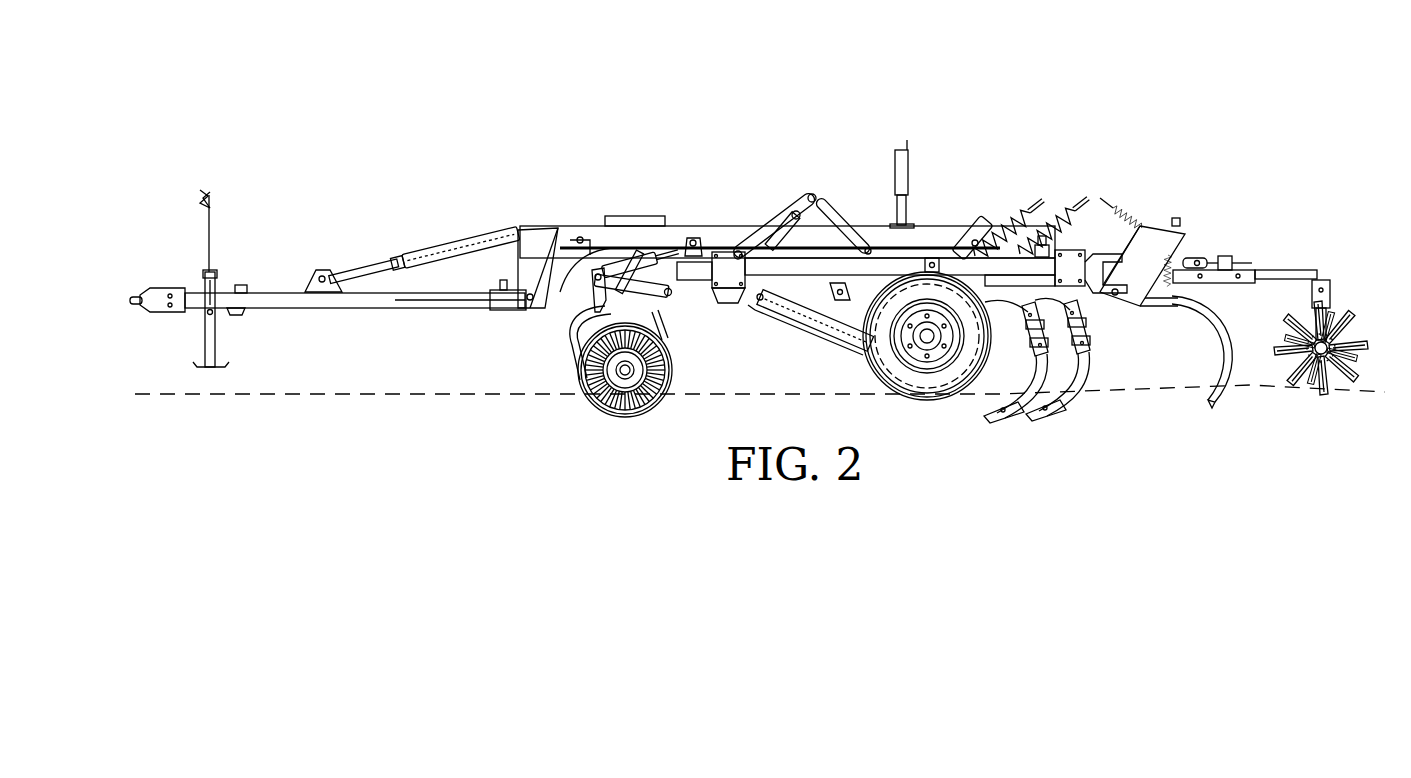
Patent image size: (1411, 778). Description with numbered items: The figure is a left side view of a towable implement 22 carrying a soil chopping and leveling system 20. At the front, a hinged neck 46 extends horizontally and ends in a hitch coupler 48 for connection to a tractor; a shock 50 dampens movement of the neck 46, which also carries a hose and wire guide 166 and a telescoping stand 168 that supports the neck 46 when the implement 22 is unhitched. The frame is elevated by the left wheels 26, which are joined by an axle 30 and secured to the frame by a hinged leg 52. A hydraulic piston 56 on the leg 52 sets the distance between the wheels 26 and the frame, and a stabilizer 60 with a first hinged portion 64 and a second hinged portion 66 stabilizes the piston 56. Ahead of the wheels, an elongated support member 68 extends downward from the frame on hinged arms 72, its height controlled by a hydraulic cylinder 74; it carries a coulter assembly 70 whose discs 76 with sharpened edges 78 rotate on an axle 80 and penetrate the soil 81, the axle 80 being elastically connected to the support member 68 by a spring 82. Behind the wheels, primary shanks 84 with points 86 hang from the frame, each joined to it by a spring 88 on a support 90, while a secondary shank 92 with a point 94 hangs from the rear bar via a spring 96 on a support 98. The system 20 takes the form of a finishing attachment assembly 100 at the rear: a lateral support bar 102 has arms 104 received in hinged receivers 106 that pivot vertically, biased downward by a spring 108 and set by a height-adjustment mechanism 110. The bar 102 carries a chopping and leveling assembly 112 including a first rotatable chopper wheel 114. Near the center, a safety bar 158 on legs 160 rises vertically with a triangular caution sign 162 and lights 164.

The chopping and leveling system 20 is at (1254, 132).
The towable implement 22 is at (553, 188).
The left wheels 26 is at (918, 392).
The axle 30 is at (922, 336).
The hinged neck 46 is at (388, 305).
The hitch coupler 48 is at (152, 288).
The shock 50 is at (436, 246).
The hinged leg 52 is at (845, 322).
The hydraulic piston 56 is at (802, 316).
The stabilizer 60 is at (800, 170).
The first hinged portion 64 is at (786, 232).
The second hinged portion 66 is at (835, 212).
The elongated support member 68 is at (598, 302).
The coulter assembly 70 is at (644, 403).
The hinged arms 72 is at (662, 300).
The hydraulic cylinder 74 is at (620, 250).
The discs 76 is at (608, 398).
The sharpened edges 78 is at (666, 400).
The axle 80 is at (635, 370).
The soil 81 is at (163, 393).
The spring 82 is at (574, 340).
The primary shanks 84 is at (1010, 390).
The point 86 is at (1040, 412).
The spring 88 is at (1010, 215).
The support 90 is at (990, 238).
The secondary shanks 92 is at (1237, 345).
The point 94 is at (1214, 404).
The spring 96 is at (1184, 262).
The support 98 is at (1168, 236).
The finishing attachment assembly 100 is at (1272, 240).
The lateral support bar 102 is at (1326, 298).
The longitudinally-extending arms 104 is at (1300, 270).
The hinged receivers 106 is at (1232, 285).
The spring 108 is at (1130, 215).
The height-adjustment mechanism 110 is at (1226, 256).
The chopping and leveling assembly 112 is at (1358, 400).
The first rotatable chopper wheel 114 is at (1310, 388).
The safety bar 158 is at (895, 135).
The legs 160 is at (906, 212).
The reflective triangular caution sign 162 is at (908, 152).
The reflective illuminable lights 164 is at (1052, 258).
The hose and wire guide 166 is at (212, 200).
The telescoping stand 168 is at (217, 338).